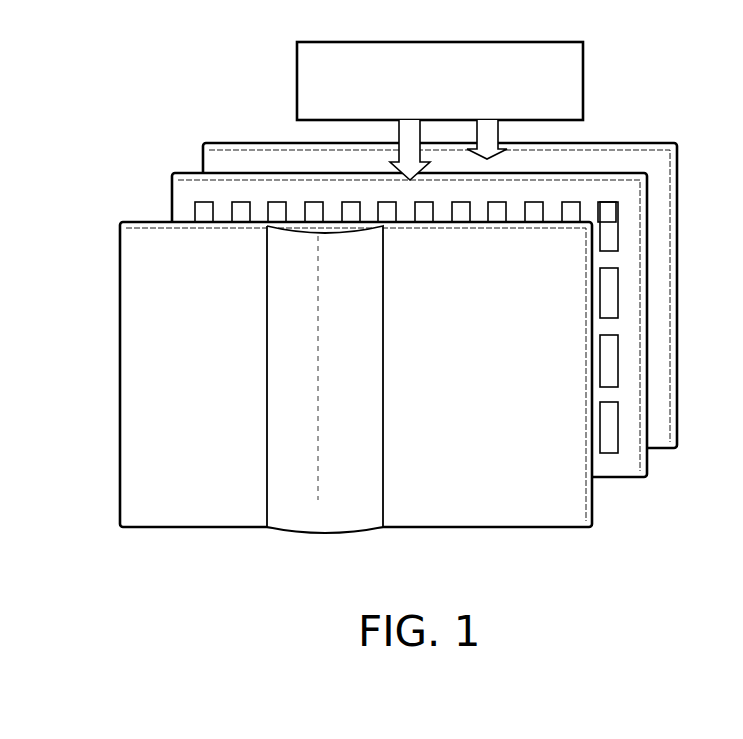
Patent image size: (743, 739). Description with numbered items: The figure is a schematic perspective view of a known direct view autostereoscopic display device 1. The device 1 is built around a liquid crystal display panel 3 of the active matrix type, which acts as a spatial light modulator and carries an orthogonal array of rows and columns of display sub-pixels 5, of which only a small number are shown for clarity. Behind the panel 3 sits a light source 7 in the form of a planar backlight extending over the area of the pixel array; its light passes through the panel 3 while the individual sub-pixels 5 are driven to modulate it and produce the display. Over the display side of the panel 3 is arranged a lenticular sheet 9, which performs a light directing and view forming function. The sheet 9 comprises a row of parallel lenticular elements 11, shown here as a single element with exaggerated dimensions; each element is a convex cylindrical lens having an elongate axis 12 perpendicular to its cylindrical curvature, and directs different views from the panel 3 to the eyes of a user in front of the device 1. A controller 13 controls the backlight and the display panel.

The direct view autostereoscopic display device 1 is at (415, 309).
The liquid crystal display panel 3 is at (647, 465).
The display sub-pixels 5 is at (614, 232).
The light source 7 is at (677, 430).
The lenticular sheet 9 is at (592, 509).
The lenticular elements 11 is at (333, 522).
The elongate axis 12 is at (320, 352).
The controller 13 is at (583, 83).